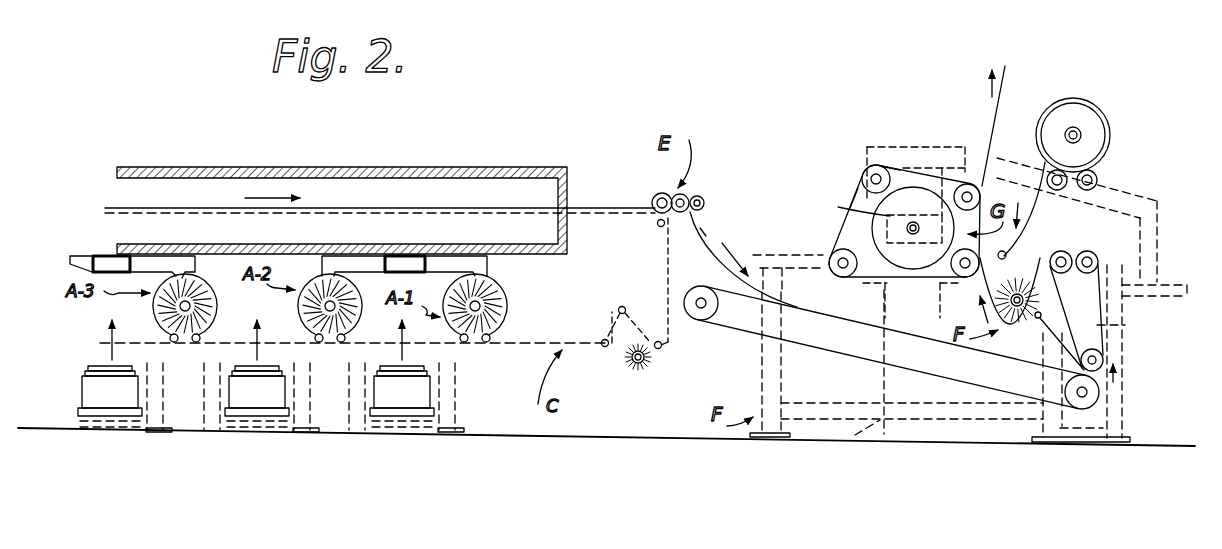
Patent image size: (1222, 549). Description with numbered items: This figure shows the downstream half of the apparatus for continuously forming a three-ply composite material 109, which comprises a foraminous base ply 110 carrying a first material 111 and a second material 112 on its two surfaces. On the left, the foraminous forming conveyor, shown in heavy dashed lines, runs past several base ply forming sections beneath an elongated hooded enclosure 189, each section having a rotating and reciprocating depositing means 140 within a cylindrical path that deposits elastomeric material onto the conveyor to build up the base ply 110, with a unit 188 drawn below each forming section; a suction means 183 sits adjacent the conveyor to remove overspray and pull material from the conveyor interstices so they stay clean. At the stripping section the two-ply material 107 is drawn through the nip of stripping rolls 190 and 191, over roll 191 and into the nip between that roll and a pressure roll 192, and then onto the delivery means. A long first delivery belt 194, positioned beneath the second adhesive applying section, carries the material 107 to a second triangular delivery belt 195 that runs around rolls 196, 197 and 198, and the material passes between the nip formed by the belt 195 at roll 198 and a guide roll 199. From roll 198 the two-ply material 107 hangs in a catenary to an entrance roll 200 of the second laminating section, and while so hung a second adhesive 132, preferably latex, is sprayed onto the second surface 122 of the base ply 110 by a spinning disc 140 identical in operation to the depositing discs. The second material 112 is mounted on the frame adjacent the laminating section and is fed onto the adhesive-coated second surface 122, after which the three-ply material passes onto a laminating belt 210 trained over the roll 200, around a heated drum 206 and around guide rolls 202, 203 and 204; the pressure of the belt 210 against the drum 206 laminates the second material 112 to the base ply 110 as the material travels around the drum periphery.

The two-ply material 107 is at (713, 236).
The three-ply composite material 109 is at (1010, 80).
The foraminous base ply 110 is at (702, 238).
The first material 111 is at (706, 221).
The second material 112 is at (1109, 194).
The second surface 122 is at (1087, 251).
The second adhesive 132 is at (1044, 260).
The depositing means 140 is at (212, 302).
The suction means 183 is at (186, 263).
The drive unit 188 is at (92, 385).
The channel guide 189 is at (221, 168).
The stripping roll 190 is at (652, 202).
The stripping roll 191 is at (685, 194).
The pressure roll 192 is at (702, 201).
The first delivery belt 194 is at (856, 338).
The second triangular delivery belt 195 is at (1097, 325).
The roll 196 is at (1042, 316).
The roll 197 is at (1105, 358).
The roll 198 is at (1060, 273).
The guide roll 199 is at (1099, 262).
The entrance roll 200 is at (935, 278).
The guide roll 202 is at (976, 183).
The guide roll 203 is at (867, 168).
The guide roll 204 is at (838, 258).
The heated drum 206 is at (845, 199).
The laminating belt 210 is at (894, 165).